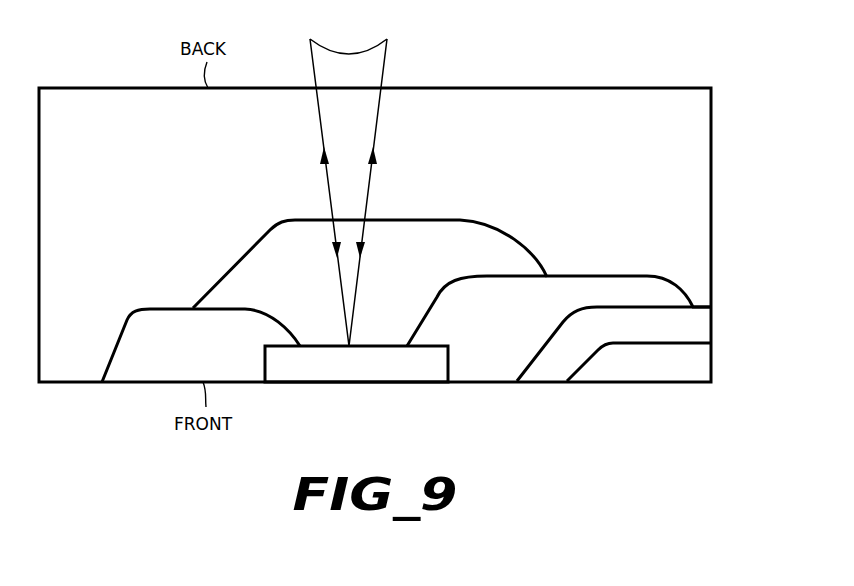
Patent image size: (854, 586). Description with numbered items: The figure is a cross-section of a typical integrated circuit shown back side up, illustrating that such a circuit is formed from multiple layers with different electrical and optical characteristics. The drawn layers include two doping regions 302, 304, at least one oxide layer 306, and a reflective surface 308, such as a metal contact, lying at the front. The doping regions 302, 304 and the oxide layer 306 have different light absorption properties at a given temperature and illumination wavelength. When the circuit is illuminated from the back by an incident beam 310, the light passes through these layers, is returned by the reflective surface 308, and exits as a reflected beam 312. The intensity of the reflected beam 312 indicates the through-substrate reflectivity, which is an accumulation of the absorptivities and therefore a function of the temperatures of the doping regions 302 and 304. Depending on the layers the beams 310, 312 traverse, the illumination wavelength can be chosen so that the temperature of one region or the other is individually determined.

The doping region 302 is at (437, 258).
The doping region 304 is at (442, 140).
The oxide layer 306 is at (488, 342).
The reflective surface 308 is at (370, 363).
The incident beam 310 is at (330, 250).
The reflected beam 312 is at (320, 152).